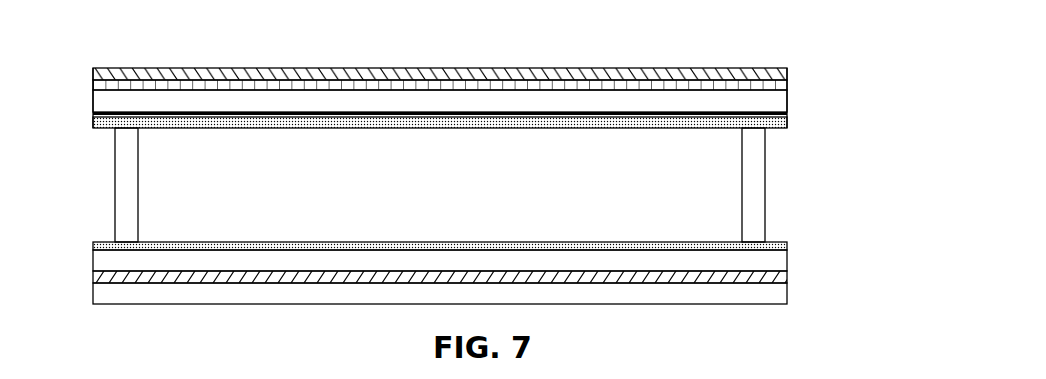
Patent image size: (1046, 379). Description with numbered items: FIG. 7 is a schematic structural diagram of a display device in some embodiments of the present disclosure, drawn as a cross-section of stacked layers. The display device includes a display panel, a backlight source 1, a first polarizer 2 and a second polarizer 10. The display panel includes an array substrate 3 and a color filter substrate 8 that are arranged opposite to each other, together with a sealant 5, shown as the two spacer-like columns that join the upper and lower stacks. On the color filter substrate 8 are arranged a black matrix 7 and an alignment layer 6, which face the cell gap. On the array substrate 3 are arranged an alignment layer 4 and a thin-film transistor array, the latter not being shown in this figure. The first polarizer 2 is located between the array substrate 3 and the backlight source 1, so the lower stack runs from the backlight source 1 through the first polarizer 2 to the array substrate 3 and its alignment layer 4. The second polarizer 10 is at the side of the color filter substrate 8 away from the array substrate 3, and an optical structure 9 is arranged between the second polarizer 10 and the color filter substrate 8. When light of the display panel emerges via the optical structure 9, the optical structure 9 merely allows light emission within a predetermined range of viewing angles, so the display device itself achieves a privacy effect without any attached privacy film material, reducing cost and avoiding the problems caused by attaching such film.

The backlight source 1 is at (787, 293).
The first polarizer 2 is at (787, 276).
The array substrate 3 is at (787, 258).
The alignment layer 4 is at (787, 243).
The sealant 5 is at (765, 205).
The alignment layer 6 is at (787, 115).
The black matrix 7 is at (852, 95).
The color filter substrate 8 is at (787, 98).
The optical structure 9 is at (787, 83).
The second polarizer 10 is at (787, 68).